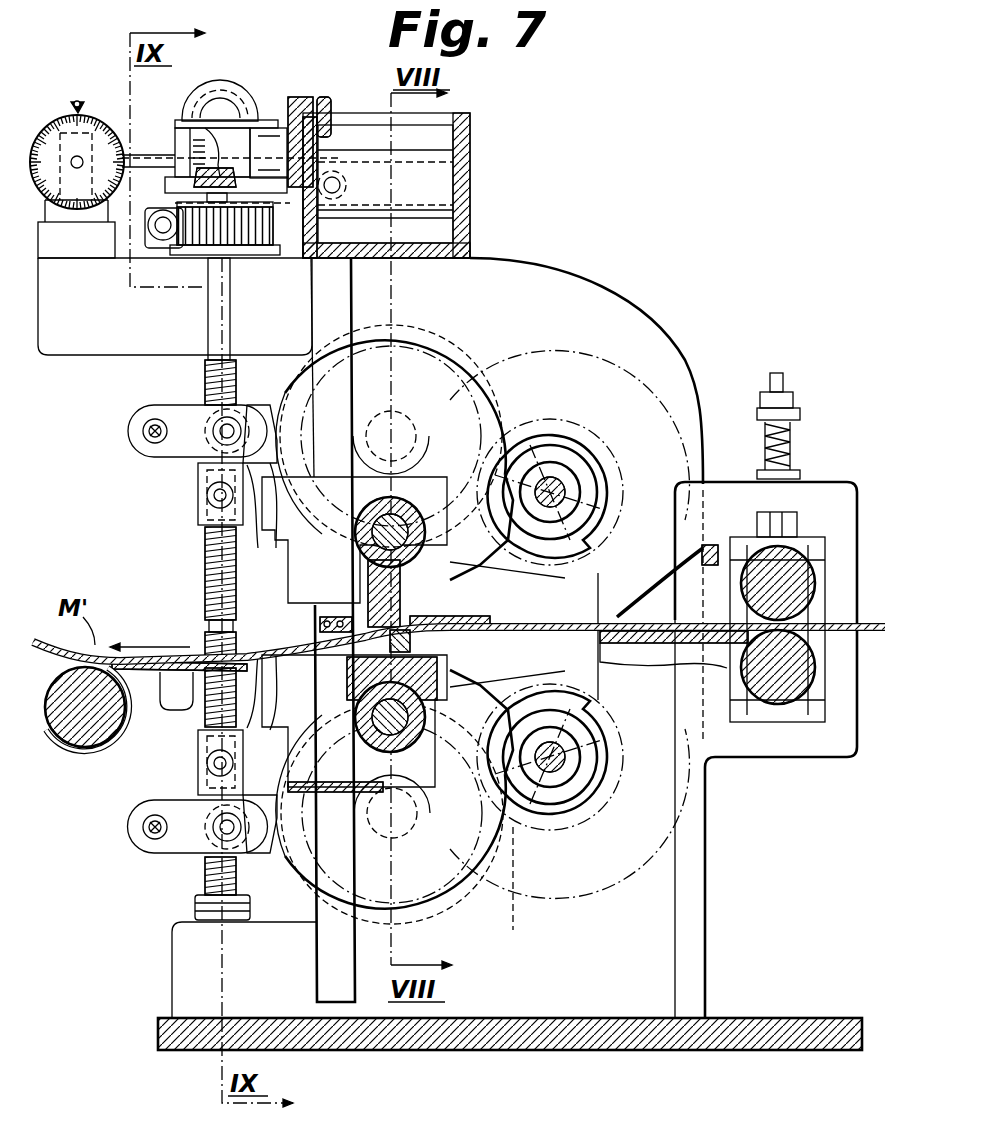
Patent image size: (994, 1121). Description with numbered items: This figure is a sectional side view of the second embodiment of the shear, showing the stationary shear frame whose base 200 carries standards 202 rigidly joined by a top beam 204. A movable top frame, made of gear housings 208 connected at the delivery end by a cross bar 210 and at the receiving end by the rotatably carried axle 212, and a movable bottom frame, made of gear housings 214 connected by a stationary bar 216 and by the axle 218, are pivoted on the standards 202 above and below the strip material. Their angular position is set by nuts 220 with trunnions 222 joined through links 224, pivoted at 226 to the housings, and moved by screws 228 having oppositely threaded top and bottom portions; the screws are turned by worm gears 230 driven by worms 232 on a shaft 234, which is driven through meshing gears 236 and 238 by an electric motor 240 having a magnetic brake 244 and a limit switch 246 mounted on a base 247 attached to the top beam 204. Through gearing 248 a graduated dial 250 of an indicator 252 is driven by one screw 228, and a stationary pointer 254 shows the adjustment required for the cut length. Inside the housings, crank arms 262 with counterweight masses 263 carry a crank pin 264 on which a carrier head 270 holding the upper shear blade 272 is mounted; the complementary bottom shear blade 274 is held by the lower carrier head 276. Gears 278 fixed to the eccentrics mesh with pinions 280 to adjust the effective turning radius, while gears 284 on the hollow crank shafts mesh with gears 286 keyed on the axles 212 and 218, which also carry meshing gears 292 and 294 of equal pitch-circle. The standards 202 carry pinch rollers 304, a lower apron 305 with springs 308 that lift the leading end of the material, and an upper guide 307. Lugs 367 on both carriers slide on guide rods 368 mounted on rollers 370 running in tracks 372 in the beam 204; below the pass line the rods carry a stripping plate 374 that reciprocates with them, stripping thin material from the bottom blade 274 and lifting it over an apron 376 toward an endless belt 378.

The base 200 is at (512, 1040).
The standards 202 is at (647, 933).
The top beam 204 is at (468, 137).
The gear housings 208 is at (499, 556).
The cross bar 210 is at (148, 431).
The axle 212 is at (560, 482).
The gear housings 214 is at (502, 712).
The stationary bar 216 is at (148, 830).
The axle 218 is at (557, 775).
The nuts 220 is at (200, 518).
The trunnions 222 is at (208, 494).
The links 224 is at (248, 482).
The pivotal connection 226 is at (215, 432).
The screws 228 is at (213, 620).
The worm gears 230 is at (262, 232).
The worms 232 is at (166, 245).
The shaft 234 is at (157, 267).
The gear 236 is at (78, 260).
The gear 238 is at (238, 90).
The electric motor 240 is at (196, 82).
The magnetic brake 244 is at (262, 130).
The limit switch 246 is at (296, 110).
The base 247 is at (327, 97).
The gearing 248 is at (198, 148).
The graduated dial 250 is at (92, 110).
The indicator 252 is at (54, 116).
The stationary pointer 254 is at (78, 100).
The crank arms 262 is at (447, 607).
The counterweight masses 263 is at (418, 322).
The crank pin 264 is at (360, 566).
The carrier head 270 is at (345, 546).
The shear blade 272 is at (402, 616).
The bottom shear blade 274 is at (432, 678).
The carrier head 276 is at (346, 672).
The gears 278 is at (458, 457).
The pinions 280 is at (391, 624).
The gears 284 is at (283, 945).
The gears 286 is at (569, 632).
The gear 292 is at (623, 380).
The gear 294 is at (506, 898).
The pinch rollers 304 is at (780, 578).
The lower guide or apron 305 is at (690, 720).
The upper guide 307 is at (706, 545).
The springs 308 is at (608, 647).
The lugs 367 is at (318, 627).
The guide rods 368 is at (334, 983).
The rollers 370 is at (512, 168).
The tracks 372 is at (345, 188).
The stripping plate 374 is at (483, 638).
The apron 376 is at (128, 676).
The endless belt 378 is at (45, 738).